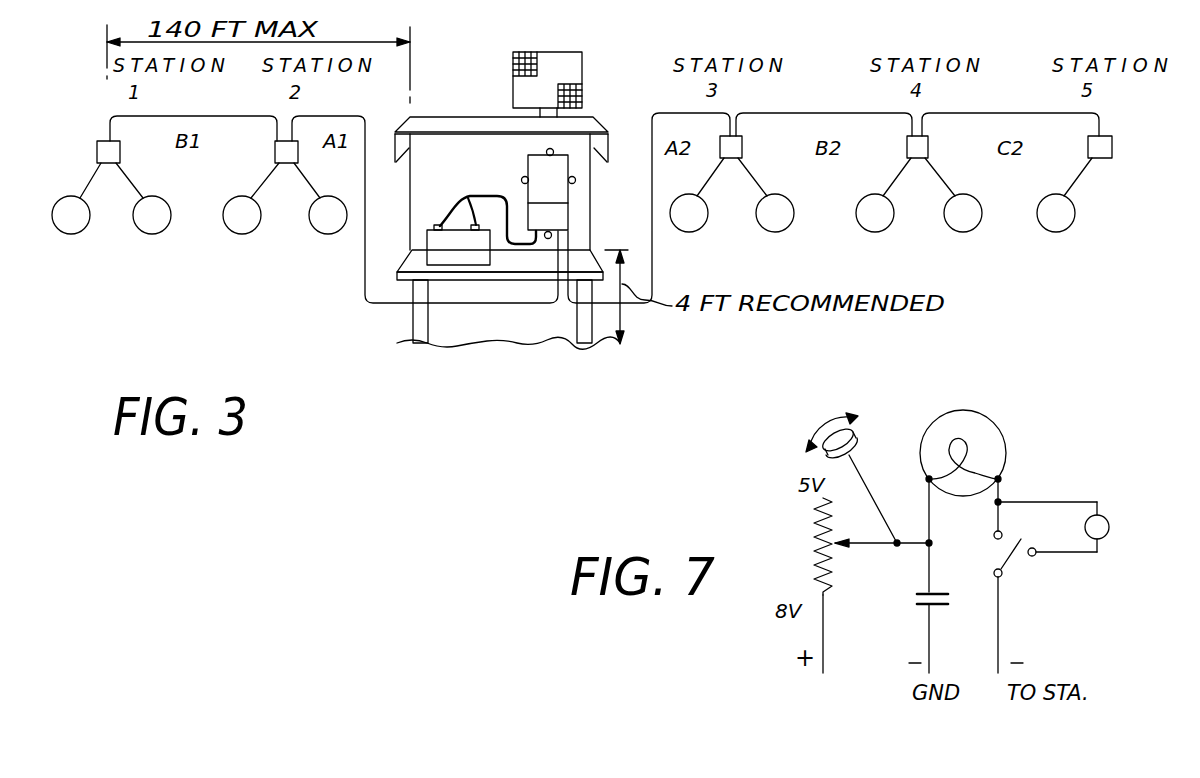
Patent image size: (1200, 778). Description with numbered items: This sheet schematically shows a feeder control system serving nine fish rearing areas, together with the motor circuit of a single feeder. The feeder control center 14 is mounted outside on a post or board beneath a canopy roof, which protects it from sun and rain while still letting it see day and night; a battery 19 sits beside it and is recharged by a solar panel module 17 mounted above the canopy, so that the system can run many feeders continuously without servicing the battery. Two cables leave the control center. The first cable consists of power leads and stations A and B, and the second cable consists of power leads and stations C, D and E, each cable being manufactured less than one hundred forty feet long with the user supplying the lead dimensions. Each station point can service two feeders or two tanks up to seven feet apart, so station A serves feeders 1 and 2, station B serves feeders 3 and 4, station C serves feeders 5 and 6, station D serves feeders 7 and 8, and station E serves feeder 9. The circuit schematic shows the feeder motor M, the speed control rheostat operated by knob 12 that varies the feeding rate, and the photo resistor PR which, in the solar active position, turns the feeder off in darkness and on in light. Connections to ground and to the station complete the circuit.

In FIG. 3, the station A is at (97, 152).
In FIG. 3, the station B is at (275, 154).
In FIG. 3, the station C is at (742, 147).
In FIG. 3, the station D is at (928, 147).
In FIG. 3, the station E is at (1112, 147).
In FIG. 3, the feeder 1 is at (71, 215).
In FIG. 3, the feeder 2 is at (152, 215).
In FIG. 3, the feeder 3 is at (242, 215).
In FIG. 3, the feeder 4 is at (328, 215).
In FIG. 3, the feeder 5 is at (689, 213).
In FIG. 3, the feeder 6 is at (775, 213).
In FIG. 3, the feeder 7 is at (875, 213).
In FIG. 3, the feeder 8 is at (963, 213).
In FIG. 3, the feeder 9 is at (1056, 213).
In FIG. 3, the solar panel module 17 is at (572, 62).
In FIG. 3, the feeder control center 14 is at (536, 163).
In FIG. 3, the battery 19 is at (427, 238).
In FIG. 7, the knob 12 is at (857, 440).
In FIG. 7, the motor M is at (983, 427).
In FIG. 7, the photo resistor PR is at (1105, 520).